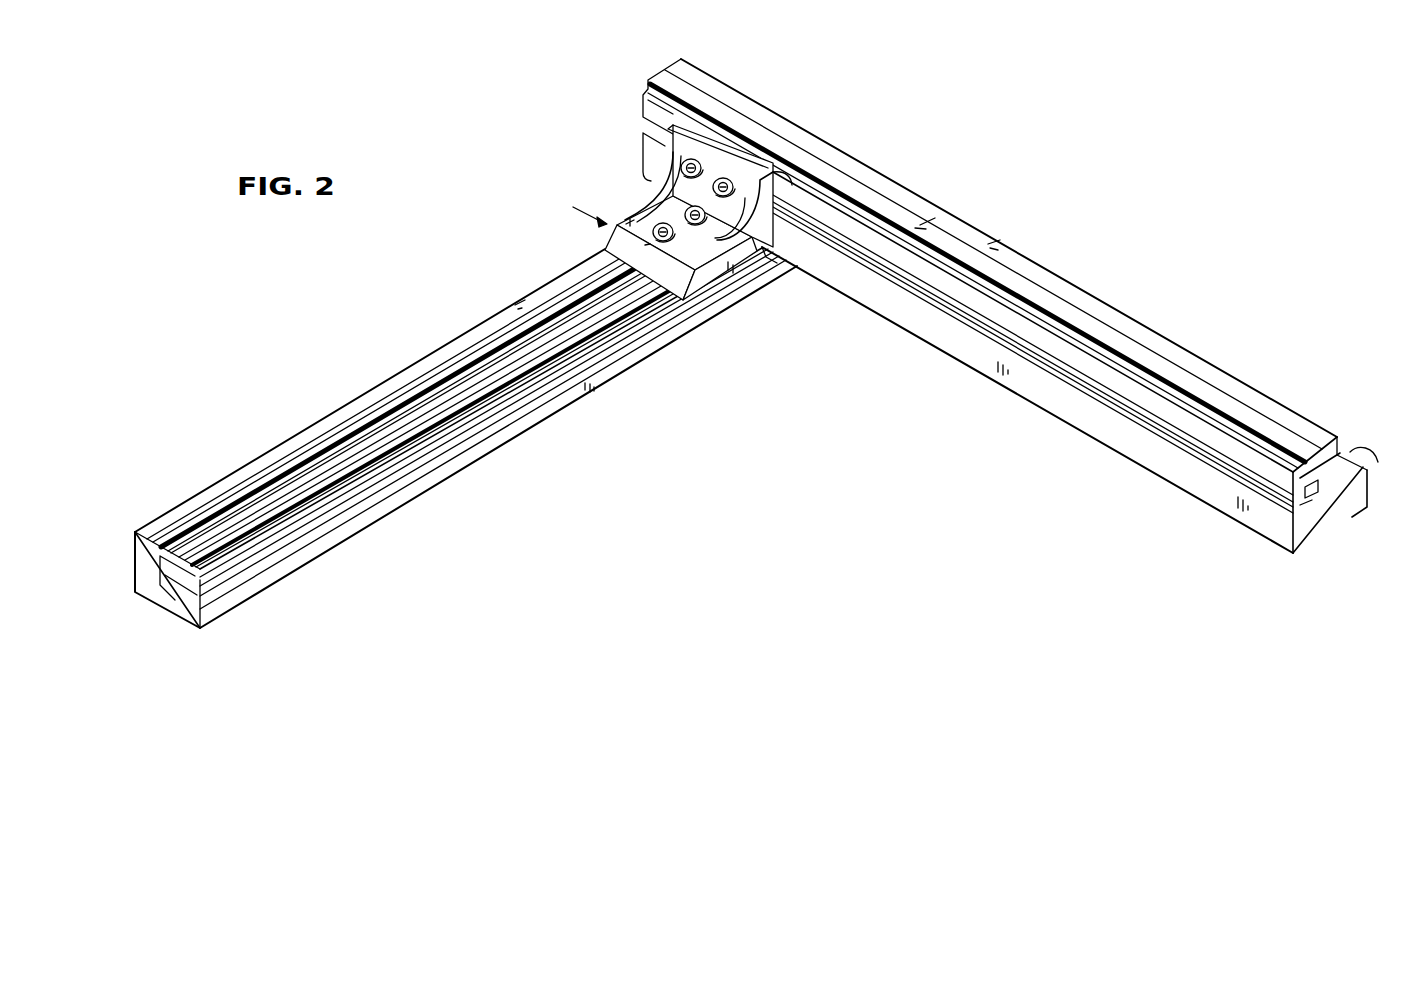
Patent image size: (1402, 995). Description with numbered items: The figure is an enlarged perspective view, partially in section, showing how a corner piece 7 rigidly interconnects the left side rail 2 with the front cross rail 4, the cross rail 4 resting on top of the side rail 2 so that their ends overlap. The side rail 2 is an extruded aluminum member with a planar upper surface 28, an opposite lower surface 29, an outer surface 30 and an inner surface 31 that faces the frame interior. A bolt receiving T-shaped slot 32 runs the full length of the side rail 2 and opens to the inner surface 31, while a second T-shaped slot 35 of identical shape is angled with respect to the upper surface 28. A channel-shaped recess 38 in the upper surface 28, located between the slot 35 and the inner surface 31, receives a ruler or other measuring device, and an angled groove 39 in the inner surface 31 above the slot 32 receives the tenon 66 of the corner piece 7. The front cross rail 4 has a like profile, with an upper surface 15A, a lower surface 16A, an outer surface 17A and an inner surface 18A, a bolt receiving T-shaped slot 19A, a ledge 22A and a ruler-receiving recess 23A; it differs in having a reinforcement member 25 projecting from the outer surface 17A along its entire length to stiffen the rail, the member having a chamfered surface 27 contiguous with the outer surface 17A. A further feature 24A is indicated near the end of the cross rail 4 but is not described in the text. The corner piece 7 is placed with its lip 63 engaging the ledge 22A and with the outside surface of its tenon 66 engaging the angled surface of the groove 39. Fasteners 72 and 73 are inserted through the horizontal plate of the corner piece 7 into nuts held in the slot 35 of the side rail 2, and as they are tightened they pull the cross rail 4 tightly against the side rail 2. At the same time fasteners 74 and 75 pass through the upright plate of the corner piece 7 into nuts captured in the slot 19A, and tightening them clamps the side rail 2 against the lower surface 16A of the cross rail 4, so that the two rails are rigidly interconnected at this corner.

The left side rail 2 is at (372, 387).
The front cross rail 4 is at (987, 240).
The corner piece 7 is at (664, 212).
The upper surface 28 is at (324, 425).
The lower surface 29 is at (157, 612).
The outer surface 30 is at (137, 535).
The inner surface 31 is at (366, 526).
The bolt receiving T-shaped slot 32 is at (486, 432).
The second bolt receiving T-shaped slot 35 is at (262, 490).
The channel-shaped recess 38 is at (440, 403).
The angled groove 39 is at (272, 550).
The upper surface 15A is at (1183, 352).
The lower surface 16A is at (1318, 550).
The outer surface 17A is at (1338, 438).
The inner surface 18A is at (1200, 473).
The bolt receiving T-shaped slot 19A is at (885, 265).
The ledge 22A is at (1100, 352).
The recess 23A is at (1073, 318).
The end cap edge 24A is at (1348, 452).
The reinforcement member 25 is at (1357, 507).
The chamfered surface 27 is at (1378, 462).
The lip 63 is at (792, 173).
The tenon 66 is at (674, 305).
The fastener 72 is at (695, 226).
The fastener 73 is at (732, 225).
The fastener 74 is at (727, 173).
The fastener 75 is at (700, 162).